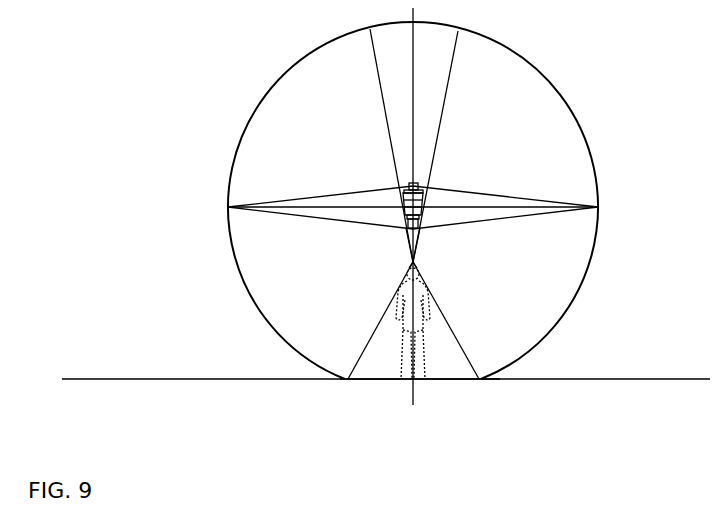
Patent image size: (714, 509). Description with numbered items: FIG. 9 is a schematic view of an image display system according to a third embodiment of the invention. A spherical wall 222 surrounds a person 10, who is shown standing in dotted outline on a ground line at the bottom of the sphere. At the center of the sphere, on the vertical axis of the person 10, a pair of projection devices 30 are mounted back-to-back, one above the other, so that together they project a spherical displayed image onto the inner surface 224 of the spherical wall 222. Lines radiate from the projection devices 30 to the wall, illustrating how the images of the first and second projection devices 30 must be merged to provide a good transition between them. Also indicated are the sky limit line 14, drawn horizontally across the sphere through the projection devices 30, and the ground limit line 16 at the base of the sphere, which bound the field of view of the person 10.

The person 10 is at (428, 285).
The sky limit line 14 is at (258, 212).
The ground limit line 16 is at (358, 361).
The projection device 30 is at (424, 191).
The spherical wall 222 is at (571, 100).
The inner surface 224 is at (527, 64).